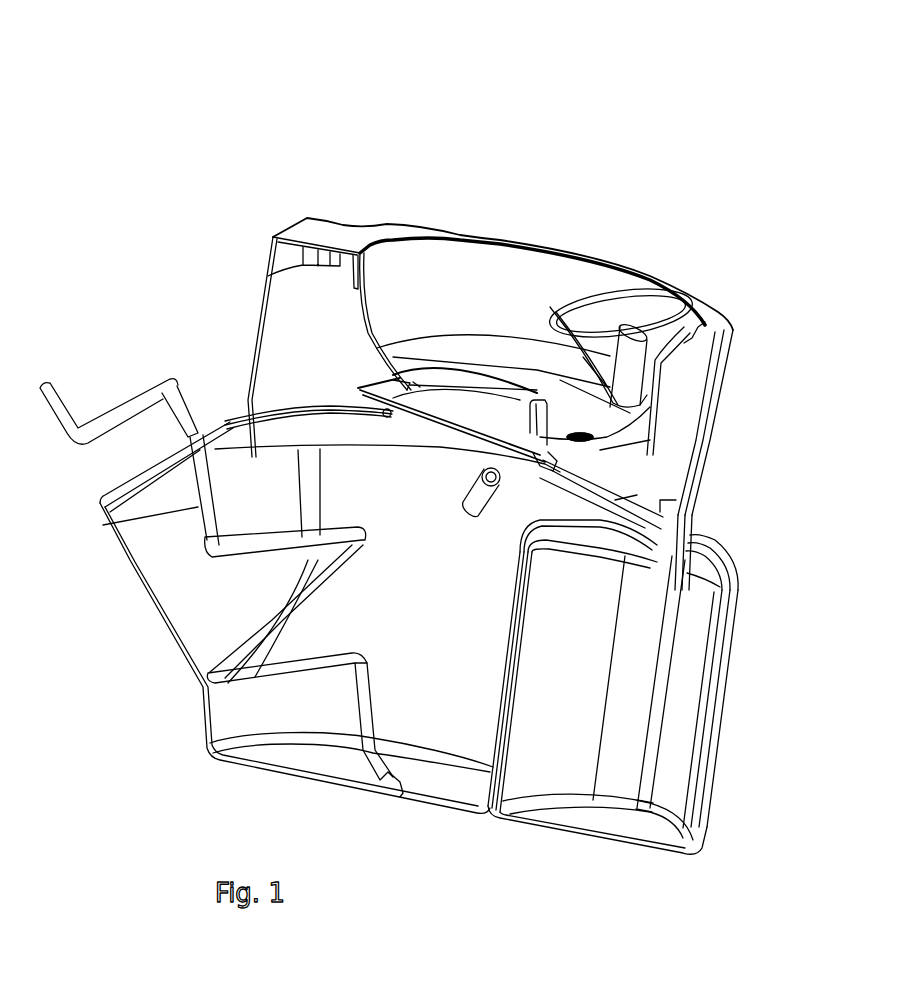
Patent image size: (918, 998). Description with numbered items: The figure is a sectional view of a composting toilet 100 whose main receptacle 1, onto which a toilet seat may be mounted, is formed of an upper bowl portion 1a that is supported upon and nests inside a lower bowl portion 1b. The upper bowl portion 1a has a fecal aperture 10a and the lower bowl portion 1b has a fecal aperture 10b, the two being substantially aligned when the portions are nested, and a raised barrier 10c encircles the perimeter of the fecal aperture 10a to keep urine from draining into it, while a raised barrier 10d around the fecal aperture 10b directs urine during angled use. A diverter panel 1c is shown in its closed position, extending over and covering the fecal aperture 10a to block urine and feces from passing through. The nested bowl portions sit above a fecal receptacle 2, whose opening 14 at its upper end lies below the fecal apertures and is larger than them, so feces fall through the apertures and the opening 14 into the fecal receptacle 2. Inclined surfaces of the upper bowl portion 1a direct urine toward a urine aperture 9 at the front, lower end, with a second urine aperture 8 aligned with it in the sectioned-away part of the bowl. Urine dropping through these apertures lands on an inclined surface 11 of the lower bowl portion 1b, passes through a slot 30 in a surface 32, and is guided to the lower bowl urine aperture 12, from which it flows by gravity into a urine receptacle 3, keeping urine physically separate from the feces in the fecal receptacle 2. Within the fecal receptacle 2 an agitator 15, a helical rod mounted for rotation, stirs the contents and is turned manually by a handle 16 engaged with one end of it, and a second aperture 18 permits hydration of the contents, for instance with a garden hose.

The composting toilet 100 is at (258, 108).
The main receptacle 1 is at (258, 251).
The upper bowl portion 1a is at (392, 272).
The lower bowl portion 1b is at (718, 412).
The diverter panel 1c is at (444, 408).
The fecal aperture 10a is at (458, 396).
The fecal aperture 10b is at (438, 446).
The raised barrier 10c is at (495, 396).
The raised barrier 10d is at (541, 470).
The second urine aperture 8 is at (580, 432).
The urine aperture 9 is at (560, 393).
The inclined surface 11 is at (620, 485).
The lower bowl urine aperture 12 is at (692, 530).
The opening 14 is at (333, 455).
The agitator 15 is at (125, 536).
The handle 16 is at (137, 395).
The second aperture 18 is at (472, 500).
The fecal receptacle 2 is at (367, 614).
The urine receptacle 3 is at (730, 660).
The slot 30 is at (637, 495).
The surface 32 is at (650, 440).